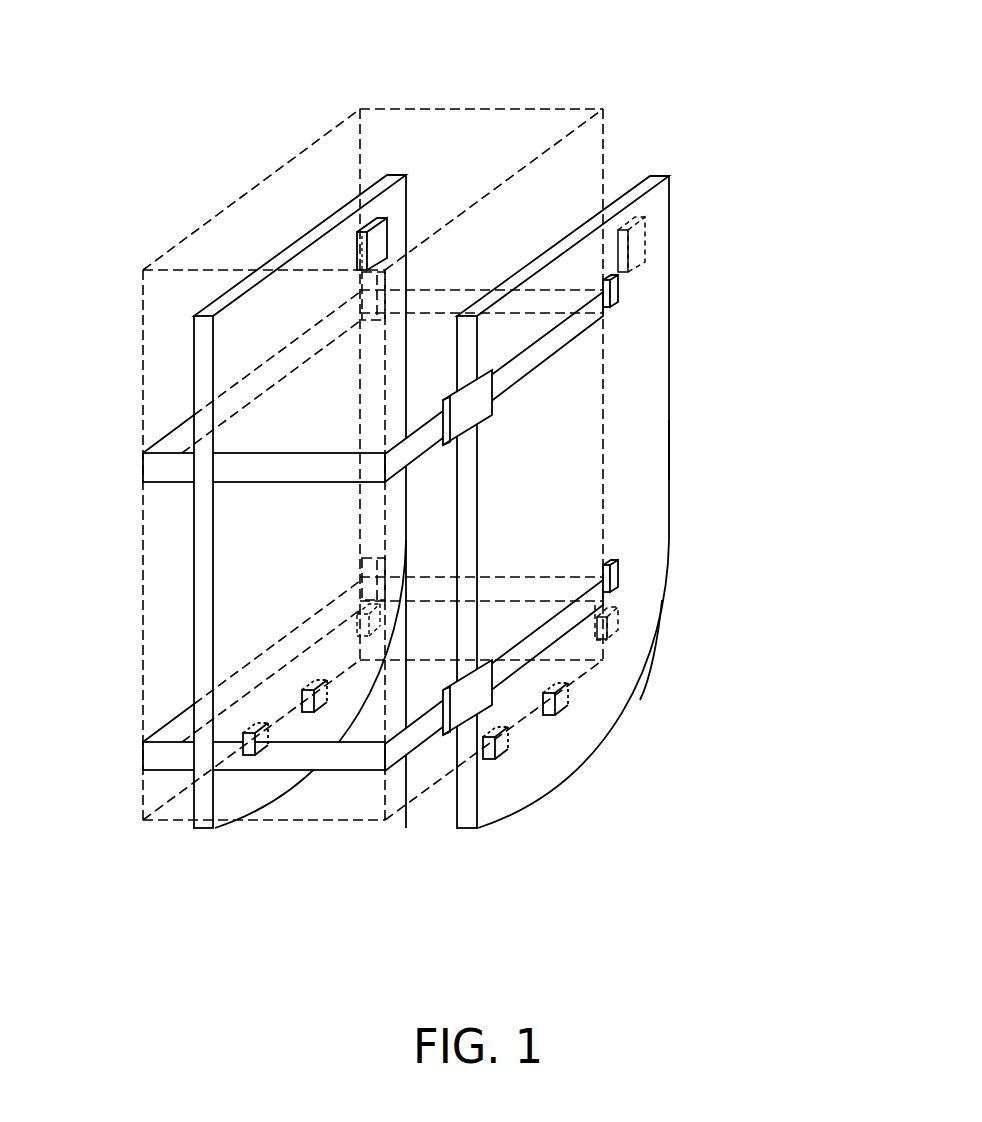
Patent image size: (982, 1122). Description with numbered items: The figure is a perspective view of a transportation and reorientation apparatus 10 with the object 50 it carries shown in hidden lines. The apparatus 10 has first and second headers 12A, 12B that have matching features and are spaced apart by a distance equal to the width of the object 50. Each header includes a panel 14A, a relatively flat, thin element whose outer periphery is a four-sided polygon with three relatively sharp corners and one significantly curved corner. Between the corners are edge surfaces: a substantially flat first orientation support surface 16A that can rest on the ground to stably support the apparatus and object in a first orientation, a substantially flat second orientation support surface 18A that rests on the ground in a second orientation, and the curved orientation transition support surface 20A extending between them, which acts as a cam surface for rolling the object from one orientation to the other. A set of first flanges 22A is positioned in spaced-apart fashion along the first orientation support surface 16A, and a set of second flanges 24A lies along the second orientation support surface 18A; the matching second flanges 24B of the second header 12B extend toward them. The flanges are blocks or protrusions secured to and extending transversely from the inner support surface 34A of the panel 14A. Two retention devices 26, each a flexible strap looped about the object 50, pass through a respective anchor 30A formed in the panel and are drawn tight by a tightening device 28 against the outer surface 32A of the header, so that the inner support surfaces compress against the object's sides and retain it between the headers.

The transportation and reorientation apparatus 10 is at (687, 190).
The first header 12A is at (672, 403).
The second header 12B is at (193, 587).
The panel 14A is at (648, 497).
The first orientation support surface 16A is at (563, 783).
The second orientation support surface 18A is at (670, 348).
The orientation transition support surface 20A is at (650, 650).
The first flanges 22A is at (567, 705).
The second flanges 24A is at (657, 172).
The second flanges 24B is at (377, 233).
The retention device 26 is at (528, 362).
The tightening device 28 is at (480, 410).
The anchor 30A is at (618, 283).
The outer surface 32A is at (648, 452).
The inner support surface 34A is at (577, 227).
The object 50 is at (437, 109).